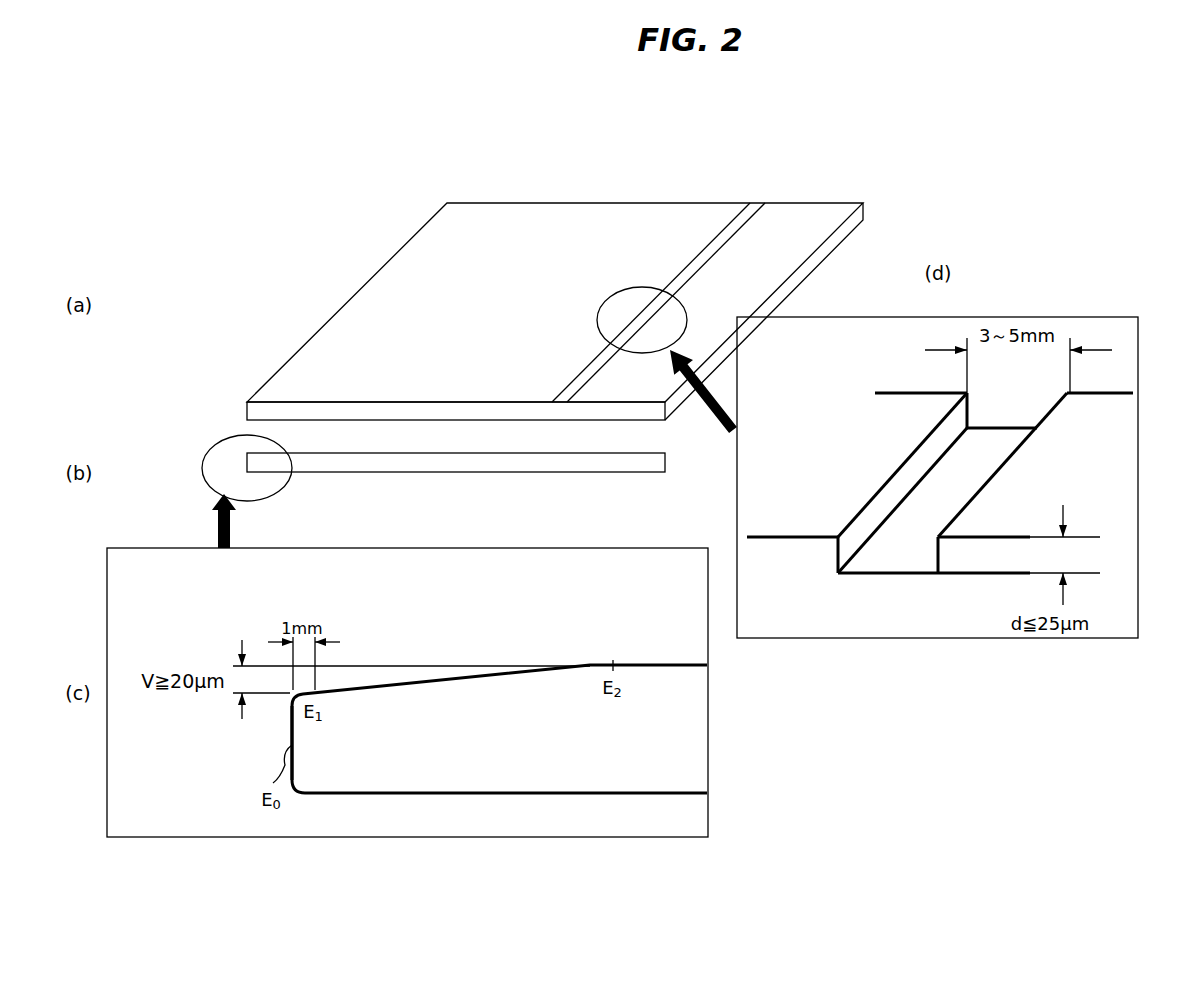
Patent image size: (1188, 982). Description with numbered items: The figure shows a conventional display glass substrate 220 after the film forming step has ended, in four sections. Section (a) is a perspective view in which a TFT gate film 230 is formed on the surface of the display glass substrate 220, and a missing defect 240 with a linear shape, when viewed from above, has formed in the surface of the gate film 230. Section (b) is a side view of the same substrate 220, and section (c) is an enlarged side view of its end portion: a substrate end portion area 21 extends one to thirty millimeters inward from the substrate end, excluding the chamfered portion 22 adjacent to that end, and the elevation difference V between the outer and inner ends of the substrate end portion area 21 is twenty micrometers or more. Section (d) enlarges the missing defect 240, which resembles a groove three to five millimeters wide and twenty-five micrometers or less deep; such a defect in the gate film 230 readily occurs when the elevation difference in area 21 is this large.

The conventional display glass substrate 220 is at (679, 196).
The gate film 230 is at (561, 216).
The missing defect 240 is at (757, 203).
The substrate end portion area 21 is at (412, 682).
The chamfered portion 22 is at (295, 700).